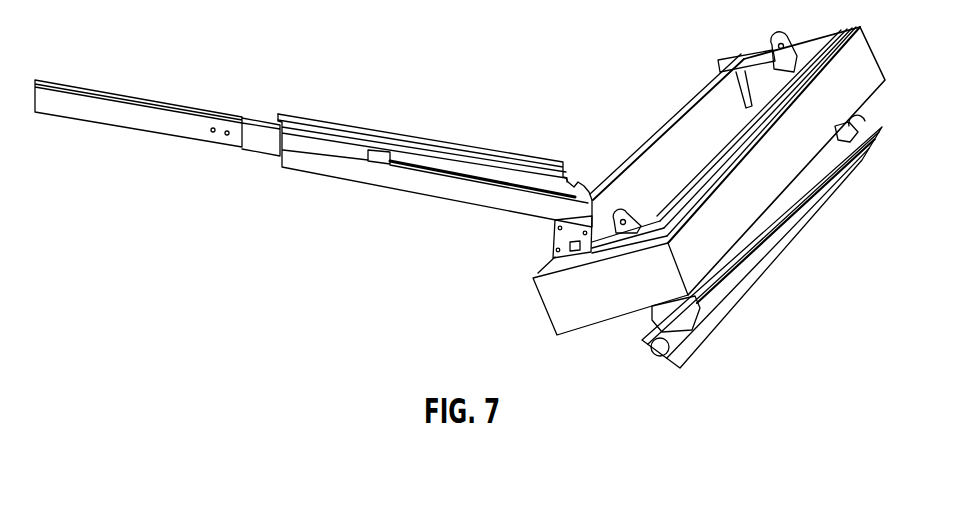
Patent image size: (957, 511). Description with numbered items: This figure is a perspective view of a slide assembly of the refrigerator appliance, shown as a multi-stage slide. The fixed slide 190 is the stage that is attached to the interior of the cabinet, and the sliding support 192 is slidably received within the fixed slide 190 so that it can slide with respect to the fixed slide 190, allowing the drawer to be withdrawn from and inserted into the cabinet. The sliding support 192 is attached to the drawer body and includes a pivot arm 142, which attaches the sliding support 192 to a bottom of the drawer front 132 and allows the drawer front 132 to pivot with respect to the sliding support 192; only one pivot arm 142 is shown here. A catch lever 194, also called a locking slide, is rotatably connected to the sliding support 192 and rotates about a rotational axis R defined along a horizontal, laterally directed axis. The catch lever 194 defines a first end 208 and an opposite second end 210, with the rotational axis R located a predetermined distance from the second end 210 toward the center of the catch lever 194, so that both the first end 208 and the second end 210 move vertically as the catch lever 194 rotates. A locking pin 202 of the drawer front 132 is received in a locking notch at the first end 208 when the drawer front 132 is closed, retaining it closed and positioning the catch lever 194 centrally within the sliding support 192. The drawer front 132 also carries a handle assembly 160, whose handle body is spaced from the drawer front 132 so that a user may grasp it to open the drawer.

The fixed slide 190 is at (115, 112).
The sliding support 192 is at (335, 126).
The second end 210 is at (378, 137).
The catch lever 194 is at (470, 172).
The rotational axis R is at (415, 166).
The first end 208 is at (574, 179).
The drawer front 132 is at (712, 107).
The pivot arm 142 is at (560, 240).
The locking pin 202 is at (620, 230).
The handle assembly 160 is at (798, 255).